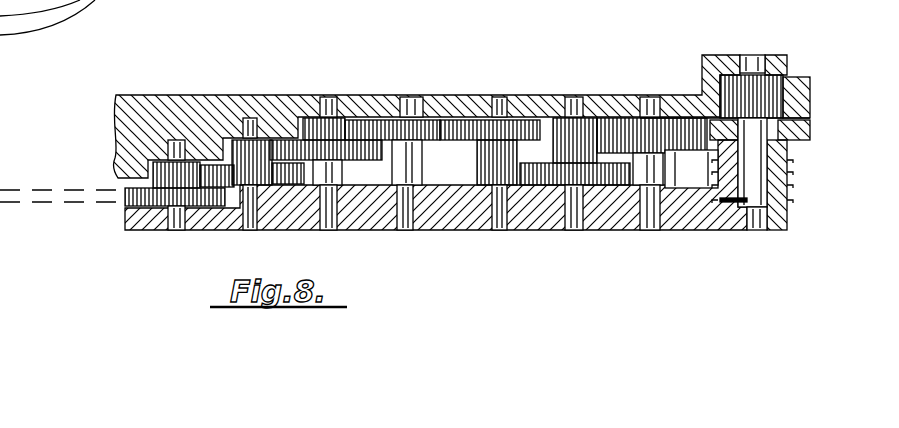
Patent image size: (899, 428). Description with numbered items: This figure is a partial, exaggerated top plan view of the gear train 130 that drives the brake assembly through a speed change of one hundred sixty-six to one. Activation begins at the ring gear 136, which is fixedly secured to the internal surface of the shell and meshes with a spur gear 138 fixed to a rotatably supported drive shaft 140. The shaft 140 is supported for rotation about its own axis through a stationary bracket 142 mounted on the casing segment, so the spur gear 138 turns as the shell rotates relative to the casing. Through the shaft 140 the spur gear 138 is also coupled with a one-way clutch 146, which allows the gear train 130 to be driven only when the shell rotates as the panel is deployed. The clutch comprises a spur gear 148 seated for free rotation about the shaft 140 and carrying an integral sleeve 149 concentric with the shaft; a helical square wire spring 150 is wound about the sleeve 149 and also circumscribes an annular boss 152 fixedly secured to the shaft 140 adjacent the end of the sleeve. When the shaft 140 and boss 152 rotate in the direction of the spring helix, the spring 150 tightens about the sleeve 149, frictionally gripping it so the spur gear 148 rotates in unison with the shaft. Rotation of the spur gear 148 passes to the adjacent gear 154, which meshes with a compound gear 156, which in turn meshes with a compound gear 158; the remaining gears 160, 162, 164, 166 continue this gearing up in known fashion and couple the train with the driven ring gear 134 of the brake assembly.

The gear train 130 is at (415, 145).
The ring gear 134 is at (57, 188).
The ring gear 136 is at (811, 96).
The spur gear 138 is at (791, 78).
The drive shaft 140 is at (757, 62).
The bracket 142 is at (723, 63).
The one-way clutch 146 is at (808, 190).
The spur gear 148 is at (812, 140).
The sleeve 149 is at (797, 158).
The helical square wire spring 150 is at (794, 172).
The boss 152 is at (787, 208).
The gear 154 is at (620, 127).
The compound gear 156 is at (547, 147).
The compound gear 158 is at (466, 128).
The gear 160 is at (431, 128).
The gear 162 is at (297, 117).
The gear 164 is at (231, 140).
The gear 166 is at (125, 201).